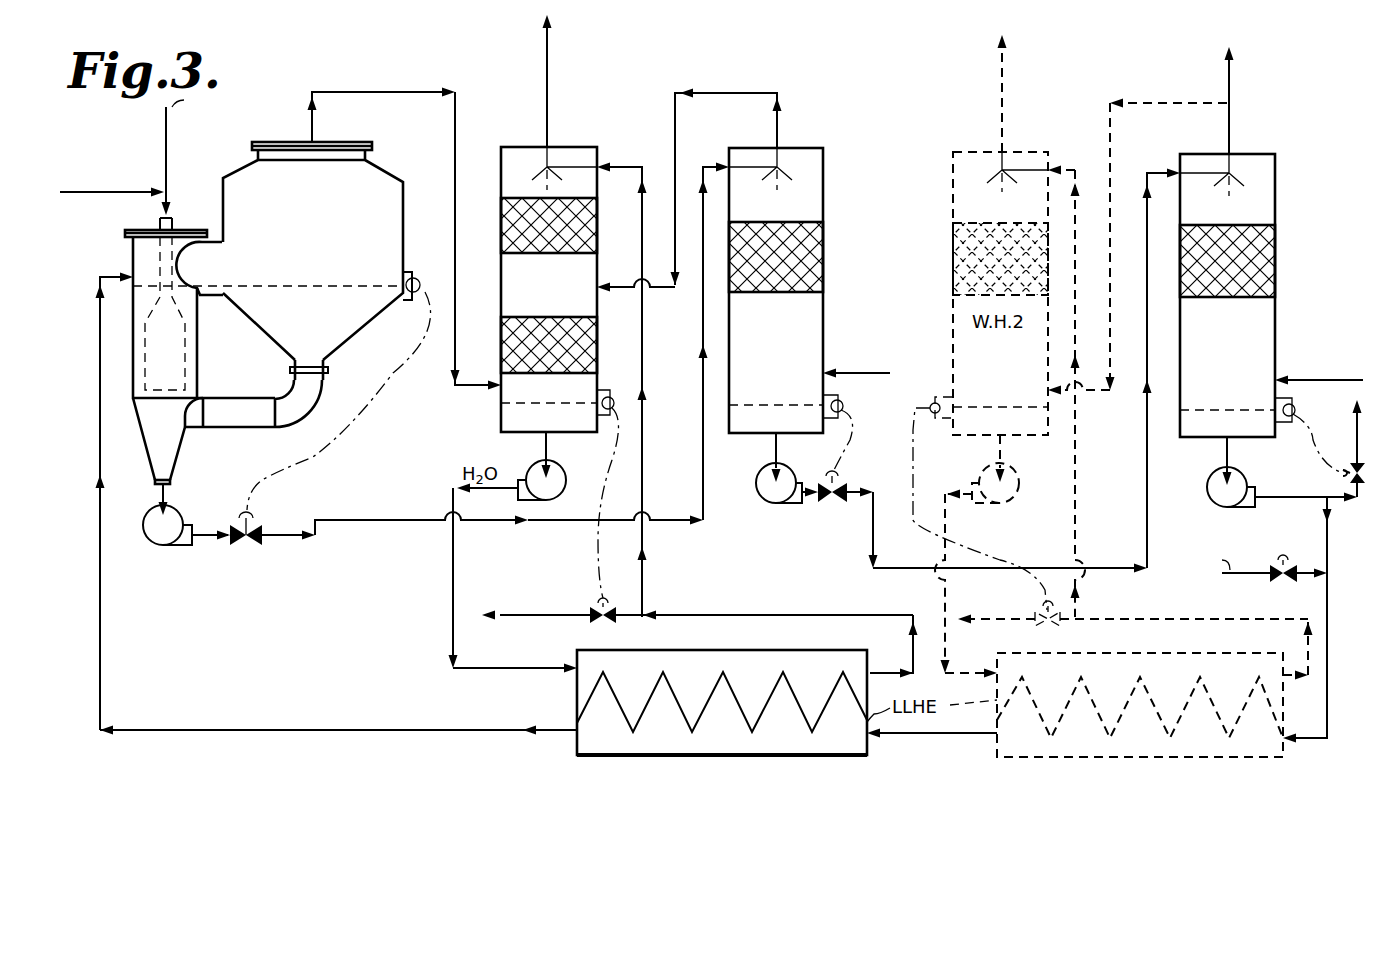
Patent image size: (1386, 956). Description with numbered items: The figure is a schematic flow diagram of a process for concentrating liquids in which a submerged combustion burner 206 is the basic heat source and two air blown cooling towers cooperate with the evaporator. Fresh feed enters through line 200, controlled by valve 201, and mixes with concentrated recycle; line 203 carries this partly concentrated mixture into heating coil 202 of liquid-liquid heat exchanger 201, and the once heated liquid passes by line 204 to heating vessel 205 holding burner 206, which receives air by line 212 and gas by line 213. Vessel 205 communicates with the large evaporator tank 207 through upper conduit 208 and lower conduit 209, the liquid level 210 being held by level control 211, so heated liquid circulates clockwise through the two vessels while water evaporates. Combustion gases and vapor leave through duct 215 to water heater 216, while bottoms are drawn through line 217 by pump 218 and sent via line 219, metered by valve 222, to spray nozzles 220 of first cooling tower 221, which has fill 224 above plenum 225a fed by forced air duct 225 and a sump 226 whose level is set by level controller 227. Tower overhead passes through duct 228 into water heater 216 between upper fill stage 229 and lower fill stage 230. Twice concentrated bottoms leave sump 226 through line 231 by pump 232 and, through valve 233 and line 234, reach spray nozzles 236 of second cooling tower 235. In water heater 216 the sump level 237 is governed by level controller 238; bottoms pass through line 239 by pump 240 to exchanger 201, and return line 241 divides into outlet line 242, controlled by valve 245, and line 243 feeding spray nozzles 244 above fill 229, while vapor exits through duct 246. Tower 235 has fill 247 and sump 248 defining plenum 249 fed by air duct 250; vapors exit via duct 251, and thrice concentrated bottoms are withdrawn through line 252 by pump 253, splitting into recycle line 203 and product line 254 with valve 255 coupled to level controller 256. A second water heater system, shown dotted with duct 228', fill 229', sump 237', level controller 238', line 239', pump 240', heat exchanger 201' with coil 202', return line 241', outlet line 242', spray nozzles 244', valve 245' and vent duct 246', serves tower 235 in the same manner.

The feed line 200 is at (1254, 576).
The liquid-liquid heat exchanger 201 is at (937, 660).
The second liquid-liquid heat exchanger 201' is at (1140, 724).
The heating coil 202 is at (722, 713).
The second heating coil 202' is at (1140, 732).
The recycle line 203 is at (935, 739).
The line 204 is at (282, 730).
The heating vessel 205 is at (197, 336).
The submerged combustion burner 206 is at (186, 371).
The evaporator tank 207 is at (388, 164).
The upper conduit 208 is at (215, 236).
The lower conduit 209 is at (260, 426).
The liquid level 210 is at (304, 264).
The level control 211 is at (418, 280).
The air input line 212 is at (166, 130).
The gas line 213 is at (144, 189).
The duct 215 is at (408, 88).
The water heater 216 is at (586, 130).
The line 217 is at (168, 489).
The pump 218 is at (162, 544).
The line 219 is at (218, 540).
The spray nozzles 220 is at (782, 154).
The first cooling tower 221 is at (744, 132).
The valve 222 is at (252, 510).
The fill 224 is at (822, 234).
The forced air input duct 225 is at (905, 340).
The plenum 225a is at (810, 308).
The sump 226 is at (750, 412).
The level controller 227 is at (840, 403).
The duct 228 is at (689, 177).
The second overhead duct 228' is at (1137, 233).
The first fill stage 229 is at (572, 225).
The second water heater fill 229' is at (1000, 246).
The second fill stage 230 is at (496, 360).
The line 231 is at (774, 450).
The pump 232 is at (770, 498).
The valve 233 is at (844, 506).
The line 234 is at (870, 568).
The second cooling tower 235 is at (1262, 152).
The spray nozzles 236 is at (1228, 170).
The sump 237 is at (549, 395).
The second water heater sump 237' is at (1000, 395).
The level controller 238 is at (619, 474).
The second level controller 238' is at (974, 481).
The line 239 is at (524, 455).
The second withdrawal line 239' is at (1028, 458).
The pump 240 is at (557, 469).
The second pump 240' is at (1000, 496).
The effluent return line 241 is at (767, 635).
The second effluent return line 241' is at (1186, 649).
The outlet line 242 is at (536, 621).
The second outlet line 242' is at (996, 624).
The return line 243 is at (642, 490).
The spray nozzles 244 is at (546, 154).
The second spray nozzles 244' is at (985, 155).
The valve 245 is at (581, 597).
The second valve 245' is at (1078, 626).
The vent duct 246 is at (574, 81).
The second vent duct 246' is at (1032, 93).
The fill 247 is at (1276, 254).
The liquid level 248 is at (1246, 418).
The plenum 249 is at (1262, 318).
The air duct 250 is at (1368, 352).
The duct 251 is at (1230, 90).
The line 252 is at (1223, 456).
The pump 253 is at (1222, 510).
The product withdrawal line 254 is at (1340, 418).
The valve 255 is at (1334, 476).
The level controller 256 is at (1303, 444).